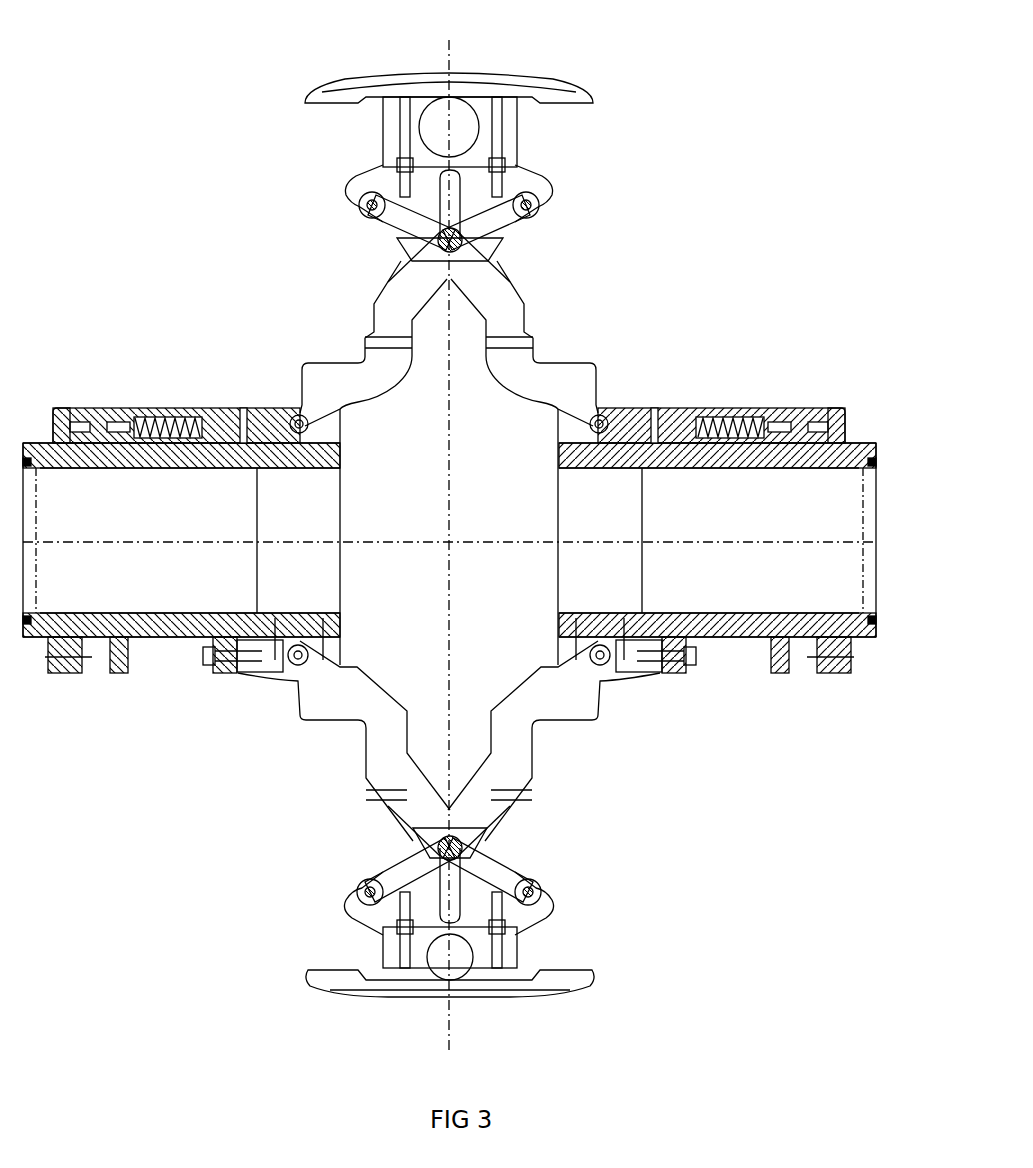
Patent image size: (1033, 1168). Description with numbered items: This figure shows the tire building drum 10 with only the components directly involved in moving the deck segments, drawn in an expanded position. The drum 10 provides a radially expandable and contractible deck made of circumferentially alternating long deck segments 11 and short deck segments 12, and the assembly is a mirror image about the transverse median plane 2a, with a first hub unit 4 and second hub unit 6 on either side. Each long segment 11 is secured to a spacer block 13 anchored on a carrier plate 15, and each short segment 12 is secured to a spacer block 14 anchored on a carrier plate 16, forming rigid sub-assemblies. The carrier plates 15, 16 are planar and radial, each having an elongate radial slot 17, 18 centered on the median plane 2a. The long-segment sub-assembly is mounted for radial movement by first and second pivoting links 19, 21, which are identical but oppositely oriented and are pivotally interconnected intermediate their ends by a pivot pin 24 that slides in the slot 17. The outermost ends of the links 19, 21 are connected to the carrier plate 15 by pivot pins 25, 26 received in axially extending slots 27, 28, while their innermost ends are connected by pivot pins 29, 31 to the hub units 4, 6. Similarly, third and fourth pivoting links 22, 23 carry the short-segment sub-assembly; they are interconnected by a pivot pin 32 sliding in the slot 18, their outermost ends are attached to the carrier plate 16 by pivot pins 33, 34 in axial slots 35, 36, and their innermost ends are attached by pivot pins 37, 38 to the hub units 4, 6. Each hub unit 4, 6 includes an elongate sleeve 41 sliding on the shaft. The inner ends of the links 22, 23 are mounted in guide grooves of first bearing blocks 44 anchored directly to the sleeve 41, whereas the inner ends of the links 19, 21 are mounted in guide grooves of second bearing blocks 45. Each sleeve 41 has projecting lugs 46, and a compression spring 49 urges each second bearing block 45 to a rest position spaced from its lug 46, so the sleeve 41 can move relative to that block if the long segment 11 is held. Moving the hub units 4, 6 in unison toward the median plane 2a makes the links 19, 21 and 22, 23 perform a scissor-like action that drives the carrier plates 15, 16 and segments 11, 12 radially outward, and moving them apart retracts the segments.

The transverse median plane 2a is at (451, 48).
The first hub unit 4 is at (108, 398).
The second hub unit 6 is at (695, 398).
The tire building drum 10 is at (675, 266).
The long deck segment 11 is at (527, 78).
The short deck segment 12 is at (345, 997).
The spacer block 13 is at (515, 133).
The spacer block 14 is at (385, 945).
The carrier plate 15 is at (515, 172).
The carrier plate 16 is at (548, 882).
The radially extending slot 17 is at (380, 166).
The radially extending slot 18 is at (517, 940).
The first pivoting link 19 is at (372, 312).
The second pivoting link 21 is at (525, 315).
The third pivoting link 22 is at (395, 795).
The fourth pivoting link 23 is at (515, 792).
The pivot pin 24 is at (462, 250).
The pivot pin 25 is at (470, 246).
The pivot pin 26 is at (372, 218).
The axially extending slot 27 is at (541, 210).
The axially extending slot 28 is at (358, 206).
The pivot pin 29 is at (297, 414).
The pivot pin 31 is at (600, 414).
The pivot pin 32 is at (487, 840).
The pivot pin 33 is at (505, 905).
The pivot pin 34 is at (355, 893).
The axial slot 35 is at (546, 890).
The axial slot 36 is at (362, 880).
The pivot pin 37 is at (288, 680).
The pivot pin 38 is at (606, 688).
The elongate sleeve 41 is at (257, 472).
The first bearing block 44 is at (237, 672).
The second bearing block 45 is at (225, 406).
The lug 46 is at (62, 408).
The compression spring 49 is at (155, 406).